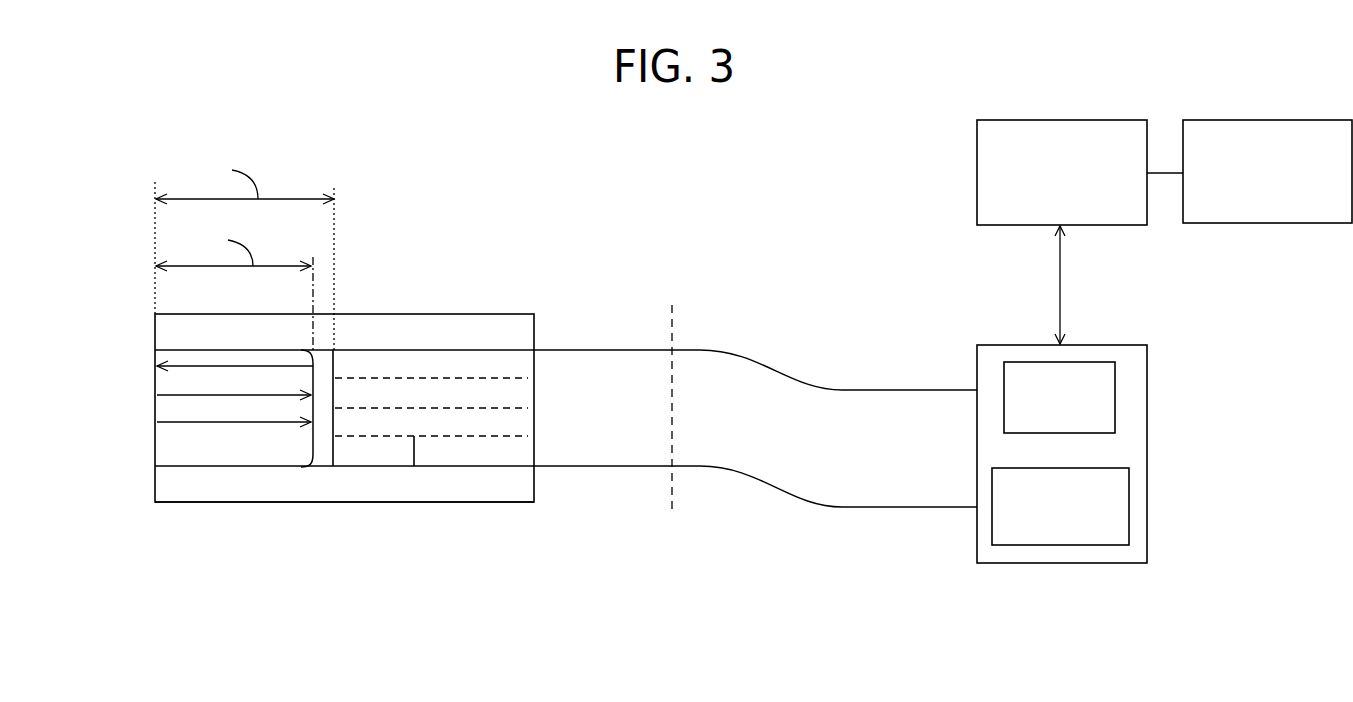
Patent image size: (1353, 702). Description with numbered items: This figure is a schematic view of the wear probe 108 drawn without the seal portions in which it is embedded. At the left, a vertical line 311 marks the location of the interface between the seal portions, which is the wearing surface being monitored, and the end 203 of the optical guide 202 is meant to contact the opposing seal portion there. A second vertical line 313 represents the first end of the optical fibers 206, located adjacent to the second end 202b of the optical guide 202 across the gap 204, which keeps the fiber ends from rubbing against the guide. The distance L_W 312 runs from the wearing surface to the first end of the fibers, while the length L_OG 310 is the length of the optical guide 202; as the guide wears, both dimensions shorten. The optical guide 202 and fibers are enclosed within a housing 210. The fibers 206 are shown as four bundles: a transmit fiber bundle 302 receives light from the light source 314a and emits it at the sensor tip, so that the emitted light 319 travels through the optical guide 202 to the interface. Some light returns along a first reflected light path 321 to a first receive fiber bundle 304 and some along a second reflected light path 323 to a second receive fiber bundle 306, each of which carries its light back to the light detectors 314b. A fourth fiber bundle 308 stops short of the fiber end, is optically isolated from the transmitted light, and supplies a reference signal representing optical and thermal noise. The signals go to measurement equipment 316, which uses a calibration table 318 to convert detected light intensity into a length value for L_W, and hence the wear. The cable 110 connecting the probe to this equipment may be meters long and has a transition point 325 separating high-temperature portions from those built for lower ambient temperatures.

The wear probe 108 is at (510, 240).
The cable 110 is at (785, 440).
The optical guide 202 is at (205, 455).
The second end of the optical guide 202b is at (333, 378).
The end of the optical guide 203 is at (155, 457).
The gap 204 is at (322, 470).
The optical fibers 206 is at (427, 477).
The housing 210 is at (497, 315).
The transmit fiber bundle 302 is at (432, 362).
The first receive fiber bundle 304 is at (510, 395).
The second receive fiber bundle 306 is at (512, 423).
The fourth fiber bundle 308 is at (485, 452).
The length L_OG 310 is at (197, 268).
The vertical line 311 is at (155, 228).
The distance L_W 312 is at (287, 199).
The vertical line 313 is at (335, 235).
The light source 314a is at (1115, 389).
The light detectors 314b is at (1130, 502).
The measurement equipment 316 is at (977, 175).
The calibration table 318 is at (1258, 223).
The emitted light 319 is at (200, 366).
The first reflected light path 321 is at (205, 395).
The second reflected light path 323 is at (195, 424).
The transition point 325 is at (676, 322).